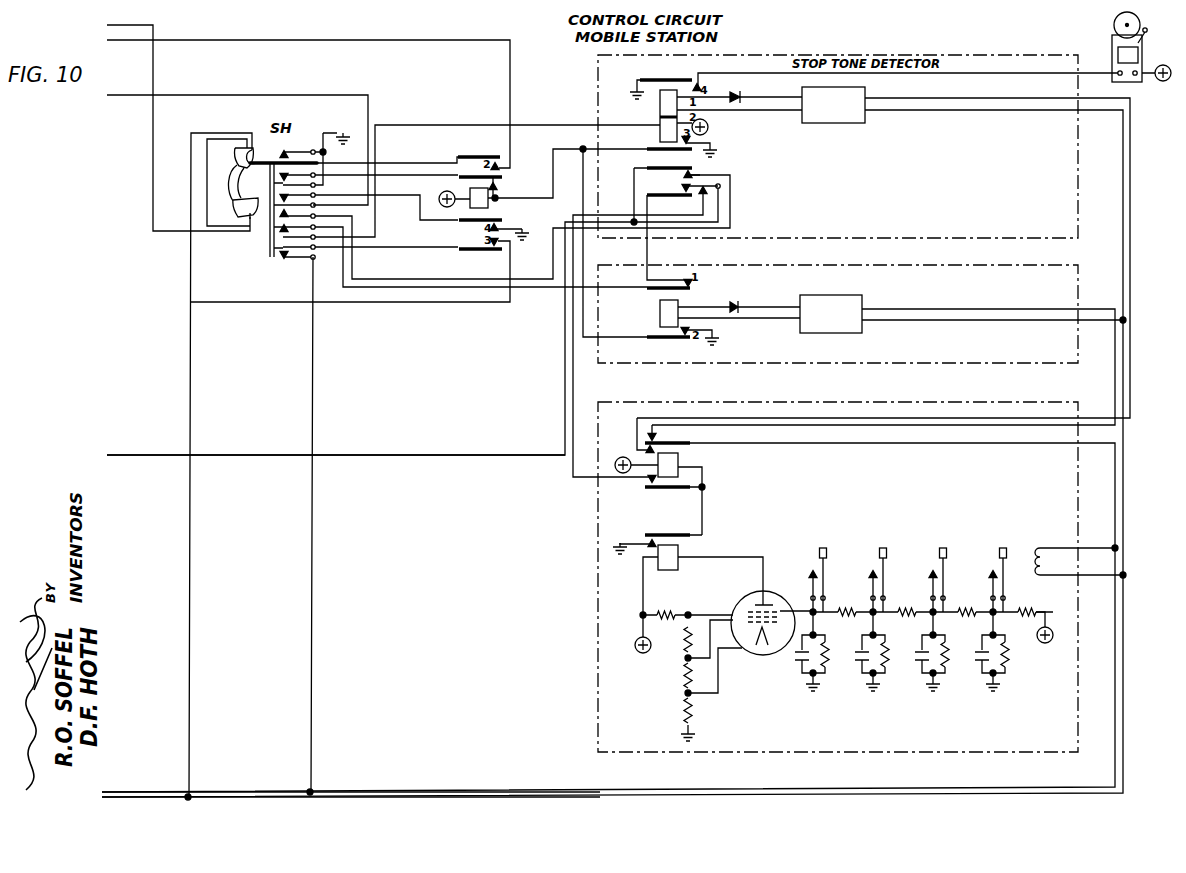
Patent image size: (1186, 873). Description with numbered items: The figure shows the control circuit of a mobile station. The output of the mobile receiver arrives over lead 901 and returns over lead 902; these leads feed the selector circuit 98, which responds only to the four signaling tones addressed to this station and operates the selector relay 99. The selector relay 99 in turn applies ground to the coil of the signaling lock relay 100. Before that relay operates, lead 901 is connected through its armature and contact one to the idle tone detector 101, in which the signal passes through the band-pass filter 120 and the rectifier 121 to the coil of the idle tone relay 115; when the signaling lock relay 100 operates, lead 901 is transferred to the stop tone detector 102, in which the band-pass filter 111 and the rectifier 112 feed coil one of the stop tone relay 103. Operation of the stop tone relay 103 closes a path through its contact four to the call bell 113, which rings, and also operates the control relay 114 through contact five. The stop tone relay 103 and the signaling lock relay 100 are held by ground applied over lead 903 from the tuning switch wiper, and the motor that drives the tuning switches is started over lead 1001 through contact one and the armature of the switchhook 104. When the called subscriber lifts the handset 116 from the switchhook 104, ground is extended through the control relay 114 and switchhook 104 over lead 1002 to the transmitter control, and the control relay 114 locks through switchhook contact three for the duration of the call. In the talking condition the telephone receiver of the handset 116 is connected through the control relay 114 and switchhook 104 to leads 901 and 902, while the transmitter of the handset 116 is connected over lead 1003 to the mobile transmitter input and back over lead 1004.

The lead 1001 is at (189, 85).
The lead 1002 is at (187, 27).
The lead 1003 is at (157, 107).
The lead 1004 is at (214, 227).
The handset 116 is at (230, 158).
The switchhook 104 is at (272, 250).
The control relay 114 is at (500, 208).
The stop tone relay 103 is at (660, 108).
The stop tone detector 102 is at (697, 243).
The rectifier 112 is at (740, 92).
The band-pass filter 111 is at (846, 124).
The call bell 113 is at (1112, 38).
The idle tone relay 115 is at (660, 312).
The rectifier 121 is at (734, 300).
The band-pass filter 120 is at (862, 296).
The idle tone detector 101 is at (675, 368).
The signaling lock relay 100 is at (678, 458).
The selector relay 99 is at (678, 568).
The selector circuit 98 is at (598, 565).
The lead 903 is at (127, 454).
The lead 902 is at (158, 778).
The lead 901 is at (248, 778).